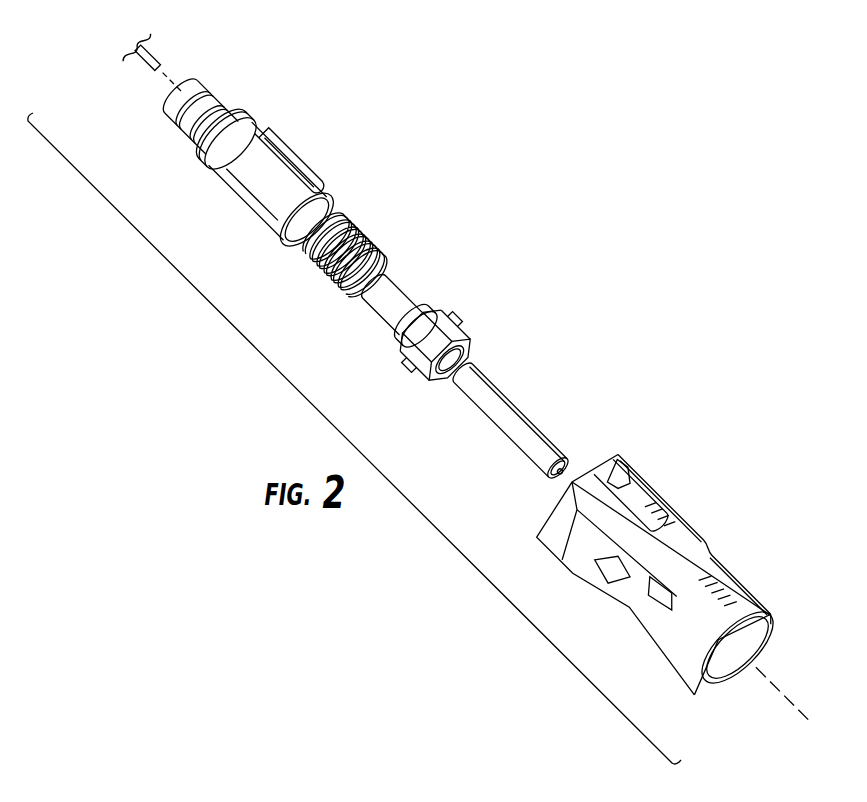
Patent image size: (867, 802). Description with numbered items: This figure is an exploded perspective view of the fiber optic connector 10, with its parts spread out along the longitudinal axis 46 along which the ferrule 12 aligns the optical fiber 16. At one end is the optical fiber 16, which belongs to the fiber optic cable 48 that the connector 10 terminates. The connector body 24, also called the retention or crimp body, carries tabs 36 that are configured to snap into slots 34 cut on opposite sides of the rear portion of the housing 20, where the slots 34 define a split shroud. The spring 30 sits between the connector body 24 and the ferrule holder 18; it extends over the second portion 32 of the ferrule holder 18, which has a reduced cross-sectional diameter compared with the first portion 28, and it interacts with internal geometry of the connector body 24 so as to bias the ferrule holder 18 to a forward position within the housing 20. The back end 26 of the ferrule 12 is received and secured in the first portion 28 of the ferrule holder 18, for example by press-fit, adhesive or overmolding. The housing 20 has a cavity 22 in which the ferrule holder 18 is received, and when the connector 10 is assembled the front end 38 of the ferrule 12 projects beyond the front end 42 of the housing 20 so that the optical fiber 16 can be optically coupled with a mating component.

The connector 10 is at (500, 262).
The ferrule 12 is at (547, 418).
The optical fiber 16 is at (157, 57).
The ferrule holder 18 is at (420, 278).
The housing 20 is at (703, 516).
The cavity 22 is at (750, 645).
The connector body 24 is at (262, 108).
The back end 26 is at (477, 370).
The first portion 28 is at (440, 307).
The spring 30 is at (358, 231).
The second portion 32 is at (373, 308).
The slots 34 is at (637, 510).
The tabs 36 is at (293, 157).
The front end 38 is at (560, 476).
The front end 42 is at (763, 618).
The longitudinal axis 46 is at (777, 690).
The fiber optic cable 48 is at (656, 7).